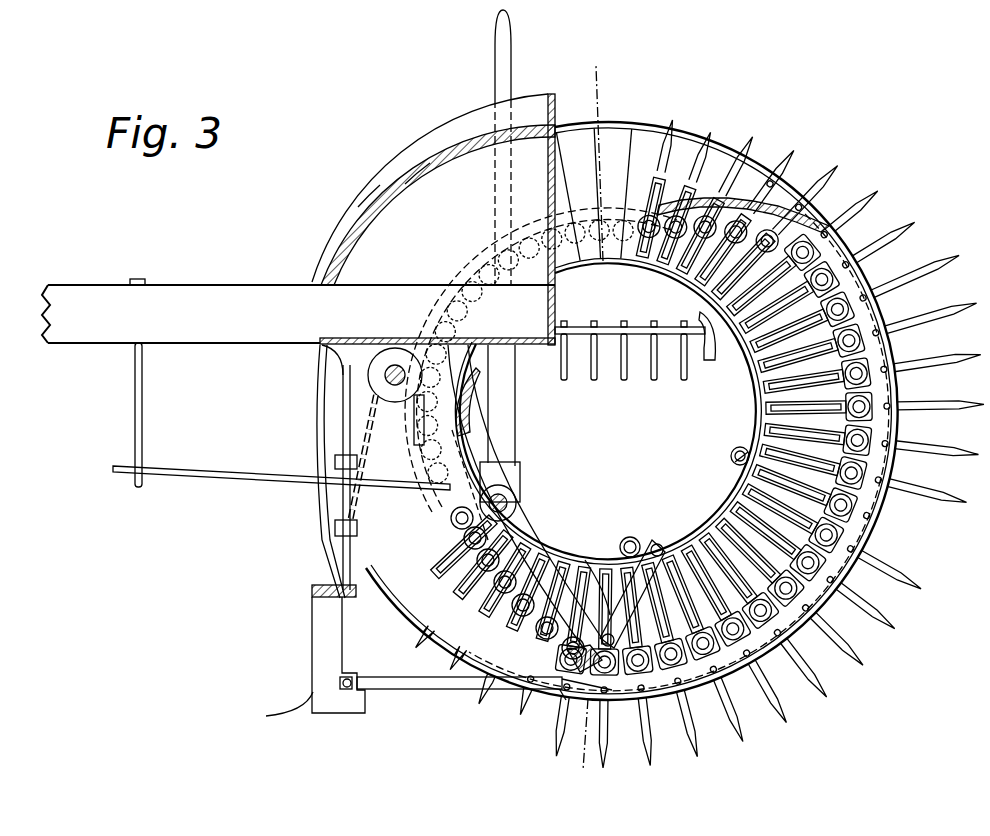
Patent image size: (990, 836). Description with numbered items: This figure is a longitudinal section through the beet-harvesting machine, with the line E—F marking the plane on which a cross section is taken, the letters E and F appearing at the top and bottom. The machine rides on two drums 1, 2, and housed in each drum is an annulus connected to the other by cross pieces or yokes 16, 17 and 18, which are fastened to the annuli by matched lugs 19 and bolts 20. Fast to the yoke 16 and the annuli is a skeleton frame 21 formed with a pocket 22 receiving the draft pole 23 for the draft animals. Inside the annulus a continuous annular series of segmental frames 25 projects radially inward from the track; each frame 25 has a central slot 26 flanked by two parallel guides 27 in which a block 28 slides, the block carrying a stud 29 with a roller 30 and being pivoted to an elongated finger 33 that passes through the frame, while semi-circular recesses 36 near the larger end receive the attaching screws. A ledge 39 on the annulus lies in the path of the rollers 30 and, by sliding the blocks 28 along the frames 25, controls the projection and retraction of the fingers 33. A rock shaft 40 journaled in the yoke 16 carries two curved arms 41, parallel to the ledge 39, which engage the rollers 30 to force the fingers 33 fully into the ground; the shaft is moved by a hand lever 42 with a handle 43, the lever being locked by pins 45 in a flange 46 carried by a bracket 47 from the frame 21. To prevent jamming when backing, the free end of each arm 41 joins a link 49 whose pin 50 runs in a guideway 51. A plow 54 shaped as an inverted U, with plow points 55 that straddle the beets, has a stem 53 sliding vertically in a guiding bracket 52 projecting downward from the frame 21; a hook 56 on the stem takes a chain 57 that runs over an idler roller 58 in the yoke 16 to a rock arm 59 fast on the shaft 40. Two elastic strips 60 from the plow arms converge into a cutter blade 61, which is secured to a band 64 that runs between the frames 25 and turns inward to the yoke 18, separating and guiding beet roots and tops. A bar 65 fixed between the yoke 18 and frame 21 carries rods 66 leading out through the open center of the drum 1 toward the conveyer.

The drum 1 is at (648, 128).
The drum 2 is at (834, 222).
The yoke 16 is at (470, 402).
The yoke 17 is at (640, 540).
The yoke 18 is at (712, 362).
The lug 19 is at (731, 458).
The bolt 20 is at (742, 448).
The skeleton frame 21 is at (438, 219).
The pocket 22 is at (410, 282).
The draft pole 23 is at (195, 300).
The segmental frame 25 is at (903, 486).
The central slot 26 is at (905, 414).
The longitudinal guide 27 is at (905, 378).
The block 28 is at (858, 535).
The stud 29 is at (902, 300).
The roller 30 is at (880, 446).
The finger 33 is at (598, 732).
The semi-circular recess 36 is at (818, 600).
The ledge 39 is at (758, 200).
The rock shaft 40 is at (510, 500).
The arm 41 is at (520, 550).
The hand lever 42 is at (503, 75).
The handle 43 is at (497, 32).
The pin 45 is at (468, 127).
The flange 46 is at (362, 207).
The bracket 47 is at (412, 182).
The link 49 is at (600, 575).
The pin 50 is at (634, 536).
The guideway 51 is at (660, 542).
The bracket 52 is at (338, 402).
The stem 53 is at (335, 540).
The plow 54 is at (312, 624).
The plow point 55 is at (300, 700).
The hook 56 is at (240, 484).
The chain 57 is at (362, 445).
The idler roller 58 is at (390, 350).
The rock arm 59 is at (472, 465).
The elastic strip 60 is at (470, 690).
The cutter blade 61 is at (560, 693).
The band 64 is at (858, 282).
The bar 65 is at (612, 328).
The rod 66 is at (656, 380).
The section line E is at (609, 153).
The section line F is at (580, 741).